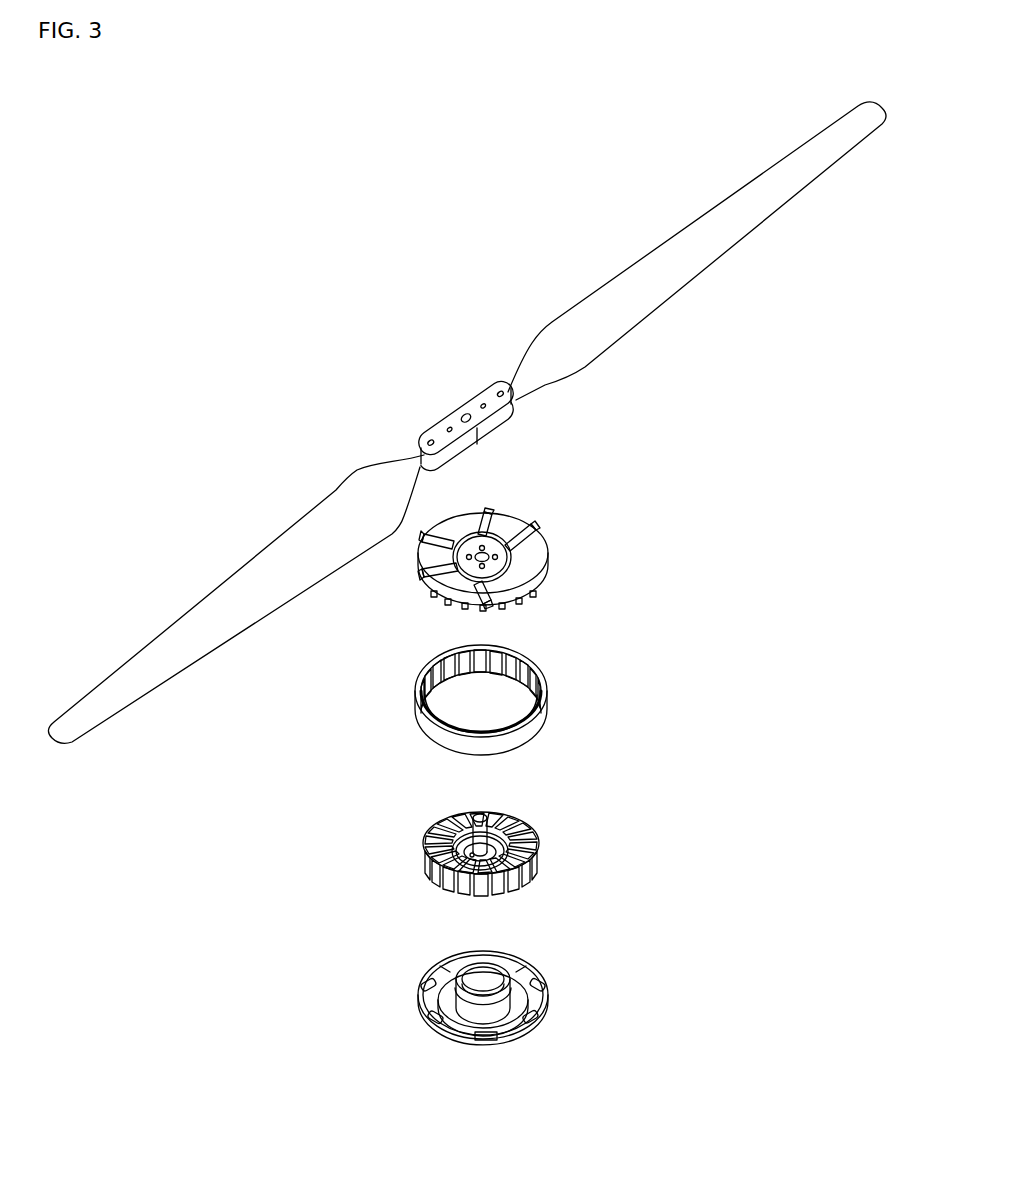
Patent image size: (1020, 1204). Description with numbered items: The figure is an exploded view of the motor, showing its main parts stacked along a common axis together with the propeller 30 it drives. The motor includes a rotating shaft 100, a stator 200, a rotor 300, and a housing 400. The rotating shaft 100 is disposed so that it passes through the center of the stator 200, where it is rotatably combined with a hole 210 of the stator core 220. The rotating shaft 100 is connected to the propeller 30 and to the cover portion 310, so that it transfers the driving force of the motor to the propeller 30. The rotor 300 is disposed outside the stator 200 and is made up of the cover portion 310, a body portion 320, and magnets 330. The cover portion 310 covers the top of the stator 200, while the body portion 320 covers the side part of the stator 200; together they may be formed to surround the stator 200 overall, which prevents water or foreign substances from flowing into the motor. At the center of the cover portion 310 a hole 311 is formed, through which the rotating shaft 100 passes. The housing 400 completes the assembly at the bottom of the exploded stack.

The propeller 30 is at (598, 284).
The rotating shaft 100 is at (488, 814).
The stator 200 is at (510, 851).
The hole 210 is at (437, 883).
The stator core 220 is at (534, 880).
The rotor 300 is at (647, 568).
The cover portion 310 is at (527, 535).
The hole 311 is at (486, 553).
The body portion 320 is at (526, 700).
The magnets 330 is at (540, 650).
The housing 400 is at (560, 983).